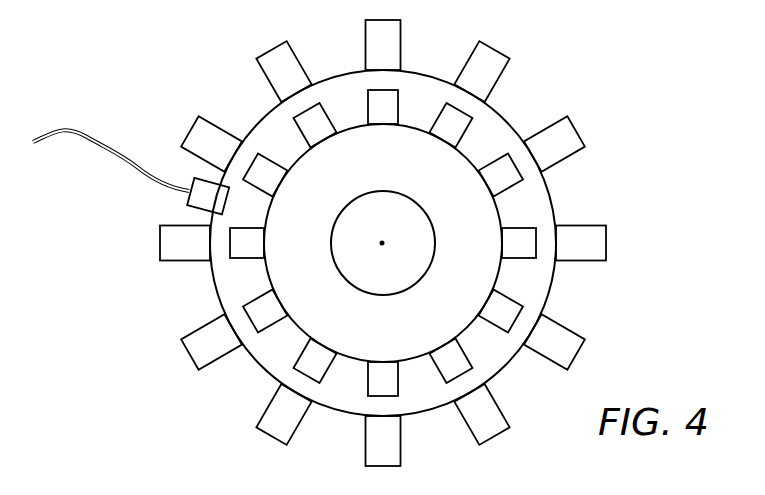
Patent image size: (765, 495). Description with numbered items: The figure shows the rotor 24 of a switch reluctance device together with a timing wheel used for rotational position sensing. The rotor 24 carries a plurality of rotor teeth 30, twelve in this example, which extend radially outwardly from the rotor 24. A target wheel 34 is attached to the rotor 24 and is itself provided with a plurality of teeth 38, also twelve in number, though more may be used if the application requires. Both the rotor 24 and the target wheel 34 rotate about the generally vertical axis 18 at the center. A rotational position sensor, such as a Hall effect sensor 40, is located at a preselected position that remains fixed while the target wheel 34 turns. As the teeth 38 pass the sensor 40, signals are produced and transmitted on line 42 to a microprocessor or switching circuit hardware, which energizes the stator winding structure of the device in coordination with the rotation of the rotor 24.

The vertical axis 18 is at (384, 244).
The rotor 24 is at (545, 204).
The rotor teeth 30 is at (497, 75).
The target wheel 34 is at (302, 325).
The teeth 38 is at (390, 112).
The Hall effect sensor 40 is at (193, 200).
The line 42 is at (92, 137).